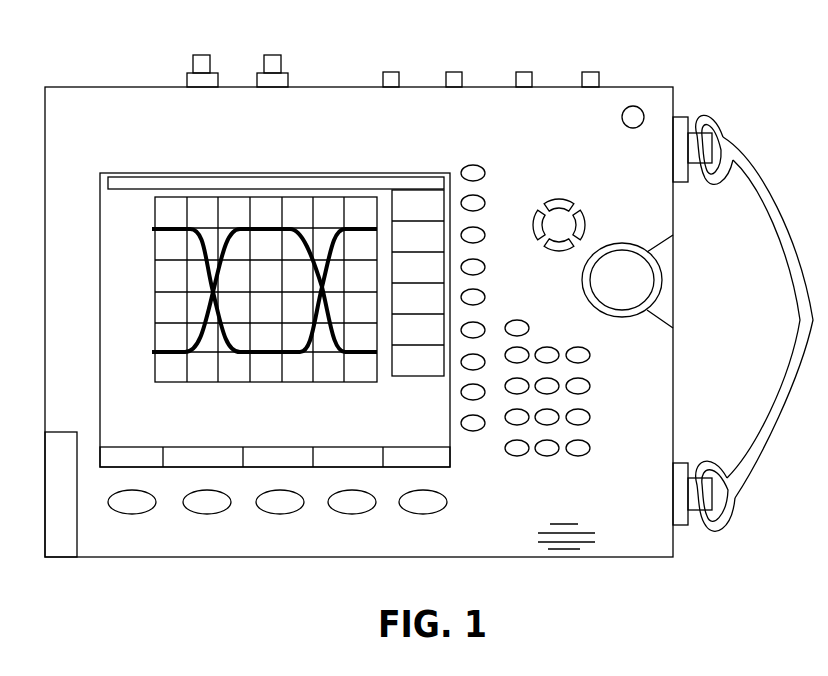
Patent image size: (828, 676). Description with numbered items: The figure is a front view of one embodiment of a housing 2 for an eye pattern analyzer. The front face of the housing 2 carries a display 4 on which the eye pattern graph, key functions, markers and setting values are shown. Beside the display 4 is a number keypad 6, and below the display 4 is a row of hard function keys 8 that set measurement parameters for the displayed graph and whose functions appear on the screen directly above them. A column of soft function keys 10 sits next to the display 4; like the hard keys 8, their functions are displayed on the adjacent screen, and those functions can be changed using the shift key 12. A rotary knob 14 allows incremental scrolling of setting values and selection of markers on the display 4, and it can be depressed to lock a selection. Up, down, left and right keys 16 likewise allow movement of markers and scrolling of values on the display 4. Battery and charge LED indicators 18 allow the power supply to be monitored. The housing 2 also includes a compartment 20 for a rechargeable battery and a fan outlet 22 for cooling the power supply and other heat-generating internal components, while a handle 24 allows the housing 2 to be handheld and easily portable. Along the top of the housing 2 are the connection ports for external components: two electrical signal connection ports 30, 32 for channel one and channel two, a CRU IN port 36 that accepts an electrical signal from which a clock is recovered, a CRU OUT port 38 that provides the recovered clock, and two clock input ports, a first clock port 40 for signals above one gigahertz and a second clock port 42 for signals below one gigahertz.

The housing 2 is at (87, 87).
The display 4 is at (168, 173).
The number keypad 6 is at (605, 421).
The hard function keys 8 is at (463, 506).
The soft function keys 10 is at (470, 451).
The shift key 12 is at (513, 320).
The rotary knob 14 is at (610, 318).
The up, down, left and right keys 16 is at (559, 199).
The battery and charge LED indicators 18 is at (623, 123).
The compartment 20 is at (73, 548).
The fan outlet 22 is at (587, 533).
The handle 24 is at (791, 272).
The electrical signal connection port 30 is at (201, 55).
The electrical signal connection port 32 is at (272, 55).
The CRU IN port 36 is at (390, 72).
The CRU OUT port 38 is at (452, 72).
The first clock port 40 is at (524, 72).
The second clock port 42 is at (592, 72).